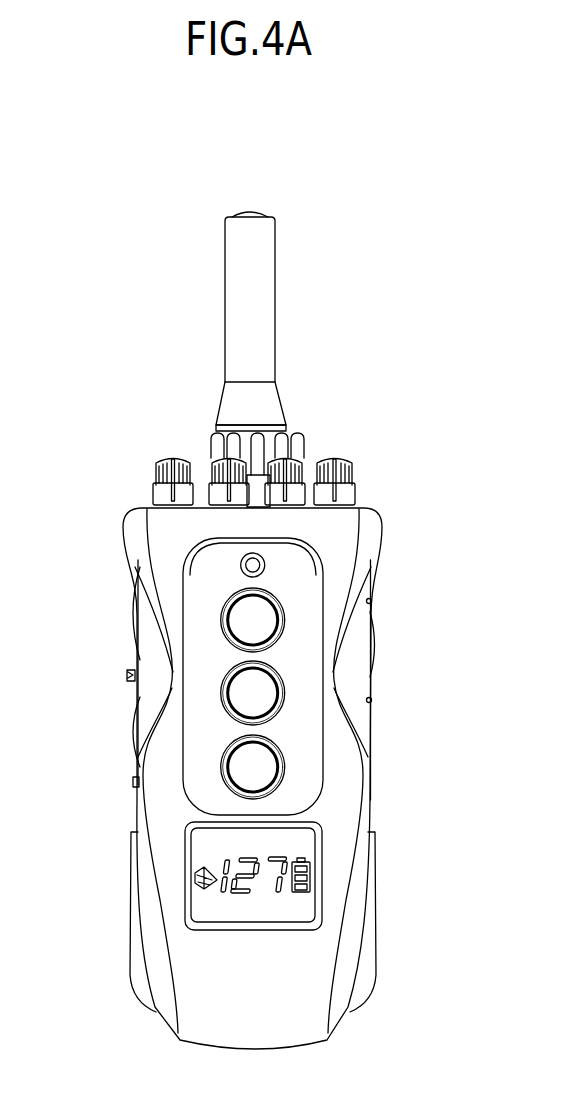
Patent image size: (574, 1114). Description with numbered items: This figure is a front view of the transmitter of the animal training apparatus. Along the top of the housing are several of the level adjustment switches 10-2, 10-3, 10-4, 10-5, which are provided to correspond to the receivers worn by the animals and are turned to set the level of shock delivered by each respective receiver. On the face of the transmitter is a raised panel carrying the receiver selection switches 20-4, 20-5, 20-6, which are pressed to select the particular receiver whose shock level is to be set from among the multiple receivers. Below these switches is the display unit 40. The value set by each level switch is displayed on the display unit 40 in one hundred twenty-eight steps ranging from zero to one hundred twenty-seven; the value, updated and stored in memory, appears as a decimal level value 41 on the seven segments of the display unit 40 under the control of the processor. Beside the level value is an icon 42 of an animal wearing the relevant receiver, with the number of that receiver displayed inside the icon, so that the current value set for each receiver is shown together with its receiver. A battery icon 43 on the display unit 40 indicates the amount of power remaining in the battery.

The level adjustment switch 10-2 is at (163, 463).
The level adjustment switch 10-3 is at (218, 456).
The level adjustment switch 10-4 is at (296, 456).
The level adjustment switch 10-5 is at (343, 461).
The receiver selection switch 20-4 is at (268, 621).
The receiver selection switch 20-5 is at (268, 693).
The receiver selection switch 20-6 is at (260, 762).
The display unit 40 is at (296, 842).
The decimal level value 41 is at (247, 856).
The mode indicator icon 42 is at (196, 877).
The battery icon 43 is at (310, 883).